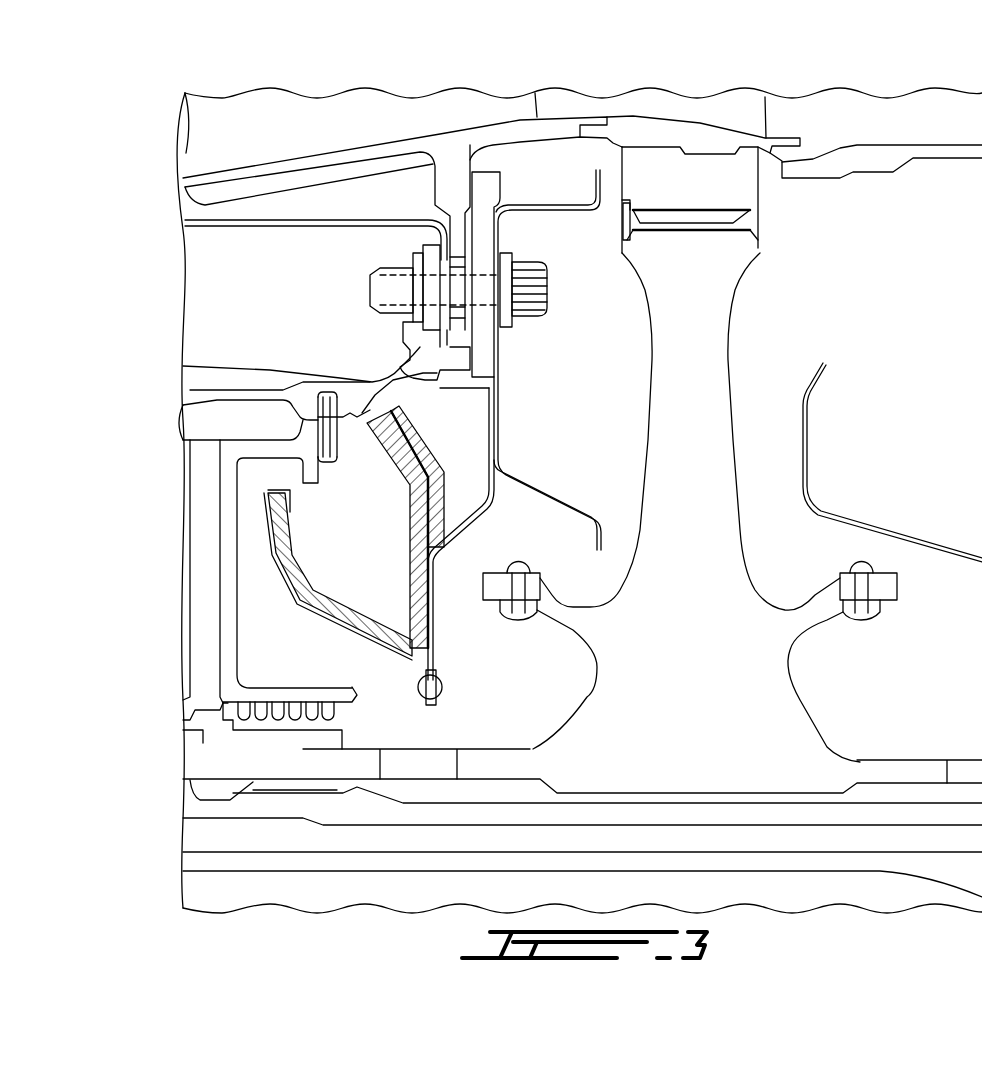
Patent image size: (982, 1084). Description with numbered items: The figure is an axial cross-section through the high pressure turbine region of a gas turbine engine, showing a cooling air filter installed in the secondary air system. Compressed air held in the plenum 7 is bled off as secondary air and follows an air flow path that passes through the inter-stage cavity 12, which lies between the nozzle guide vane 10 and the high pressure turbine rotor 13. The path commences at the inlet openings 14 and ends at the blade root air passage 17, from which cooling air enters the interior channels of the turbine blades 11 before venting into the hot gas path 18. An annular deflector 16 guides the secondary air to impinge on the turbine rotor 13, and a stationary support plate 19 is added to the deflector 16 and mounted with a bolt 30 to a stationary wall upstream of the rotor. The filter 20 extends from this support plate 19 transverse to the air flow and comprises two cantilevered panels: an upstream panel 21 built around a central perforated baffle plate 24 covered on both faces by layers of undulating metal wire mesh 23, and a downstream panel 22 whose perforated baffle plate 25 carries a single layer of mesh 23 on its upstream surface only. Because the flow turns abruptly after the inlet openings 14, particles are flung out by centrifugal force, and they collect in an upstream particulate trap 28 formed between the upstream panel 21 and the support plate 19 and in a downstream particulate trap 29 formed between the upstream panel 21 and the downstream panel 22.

The plenum 7 is at (266, 281).
The nozzle guide vane 10 is at (336, 134).
The turbine blades 11 is at (736, 110).
The inter-stage cavity 12 is at (270, 647).
The high pressure turbine rotor 13 is at (722, 710).
The inlet openings 14 is at (392, 380).
The annular deflector 16 is at (562, 205).
The blade root air passage 17 is at (683, 233).
The hot gas path 18 is at (957, 131).
The support plate 19 is at (482, 527).
The filter 20 is at (212, 543).
The upstream panel 21 is at (412, 428).
The downstream panel 22 is at (268, 500).
The mesh 23 is at (420, 465).
The perforated baffle plate 24 is at (183, 366).
The perforated baffle plate 25 is at (343, 545).
The upstream particulate trap 28 is at (487, 502).
The downstream particulate trap 29 is at (397, 611).
The bolt 30 is at (548, 300).